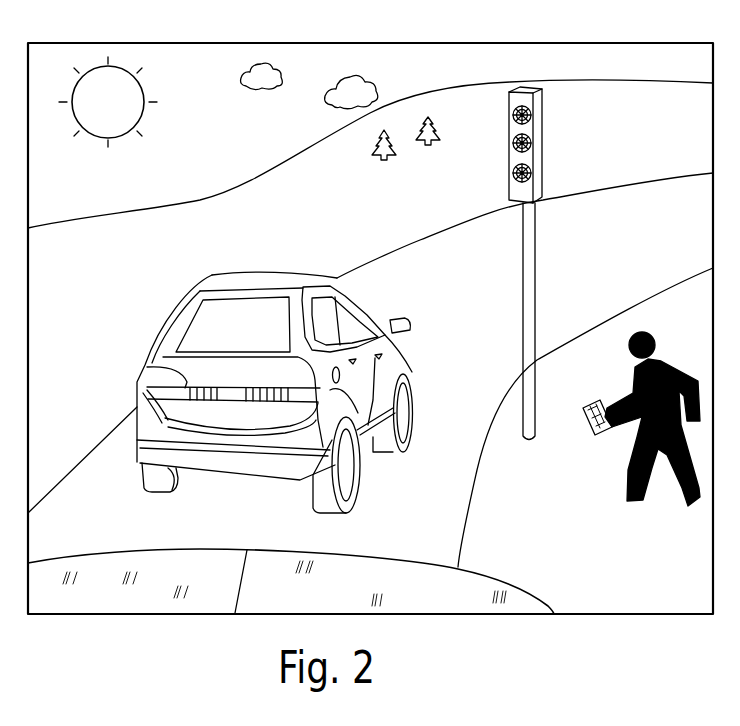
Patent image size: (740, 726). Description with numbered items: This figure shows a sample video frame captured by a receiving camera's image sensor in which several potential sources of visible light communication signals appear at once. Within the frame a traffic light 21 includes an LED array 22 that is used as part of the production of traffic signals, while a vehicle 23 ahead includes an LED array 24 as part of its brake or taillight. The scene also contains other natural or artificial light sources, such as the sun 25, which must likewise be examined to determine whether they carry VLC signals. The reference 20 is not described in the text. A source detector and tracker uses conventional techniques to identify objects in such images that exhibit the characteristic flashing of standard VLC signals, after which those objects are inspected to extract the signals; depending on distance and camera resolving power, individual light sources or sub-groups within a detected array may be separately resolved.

The ego vehicle 20 is at (138, 615).
The traffic light 21 is at (565, 223).
The LED array 22 is at (515, 122).
The vehicle 23 is at (231, 467).
The LED array 24 is at (187, 383).
The sun 25 is at (112, 87).